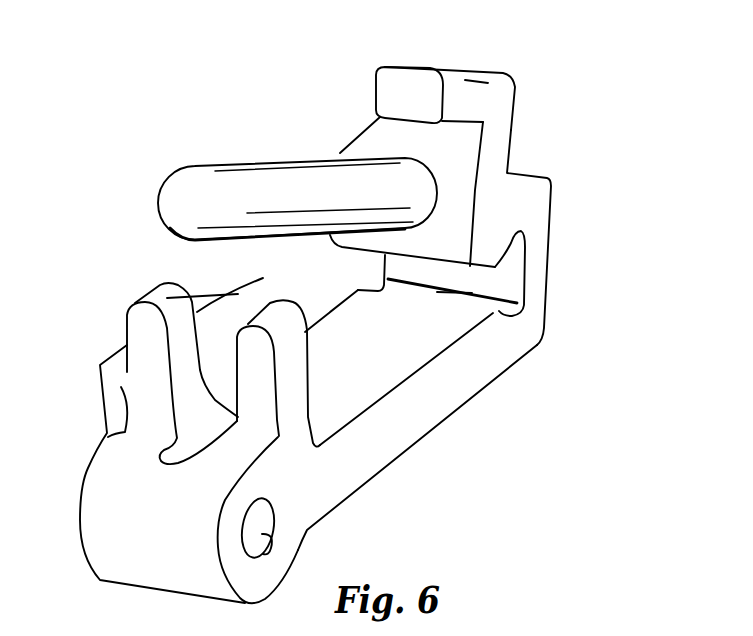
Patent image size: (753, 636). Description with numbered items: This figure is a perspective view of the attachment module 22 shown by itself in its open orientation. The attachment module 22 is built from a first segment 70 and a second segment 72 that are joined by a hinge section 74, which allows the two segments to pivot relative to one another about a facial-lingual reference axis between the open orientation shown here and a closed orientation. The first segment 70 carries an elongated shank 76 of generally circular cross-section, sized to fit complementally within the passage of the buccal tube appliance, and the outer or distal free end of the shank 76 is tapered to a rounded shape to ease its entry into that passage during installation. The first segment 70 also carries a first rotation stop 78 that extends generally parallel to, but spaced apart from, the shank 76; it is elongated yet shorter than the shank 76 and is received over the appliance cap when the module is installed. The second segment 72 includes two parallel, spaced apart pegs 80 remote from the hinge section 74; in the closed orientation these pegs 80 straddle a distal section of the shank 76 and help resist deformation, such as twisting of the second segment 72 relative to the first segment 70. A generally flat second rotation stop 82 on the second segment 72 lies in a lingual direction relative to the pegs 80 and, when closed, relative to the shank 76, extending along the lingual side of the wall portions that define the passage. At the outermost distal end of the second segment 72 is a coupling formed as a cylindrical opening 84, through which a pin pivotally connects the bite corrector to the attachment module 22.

The attachment module 22 is at (136, 106).
The first segment 70 is at (535, 121).
The second segment 72 is at (460, 430).
The hinge section 74 is at (533, 275).
The elongated shank 76 is at (283, 180).
The first rotation stop 78 is at (447, 70).
The pegs 80 is at (271, 320).
The second rotation stop 82 is at (207, 295).
The cylindrical opening 84 is at (268, 546).